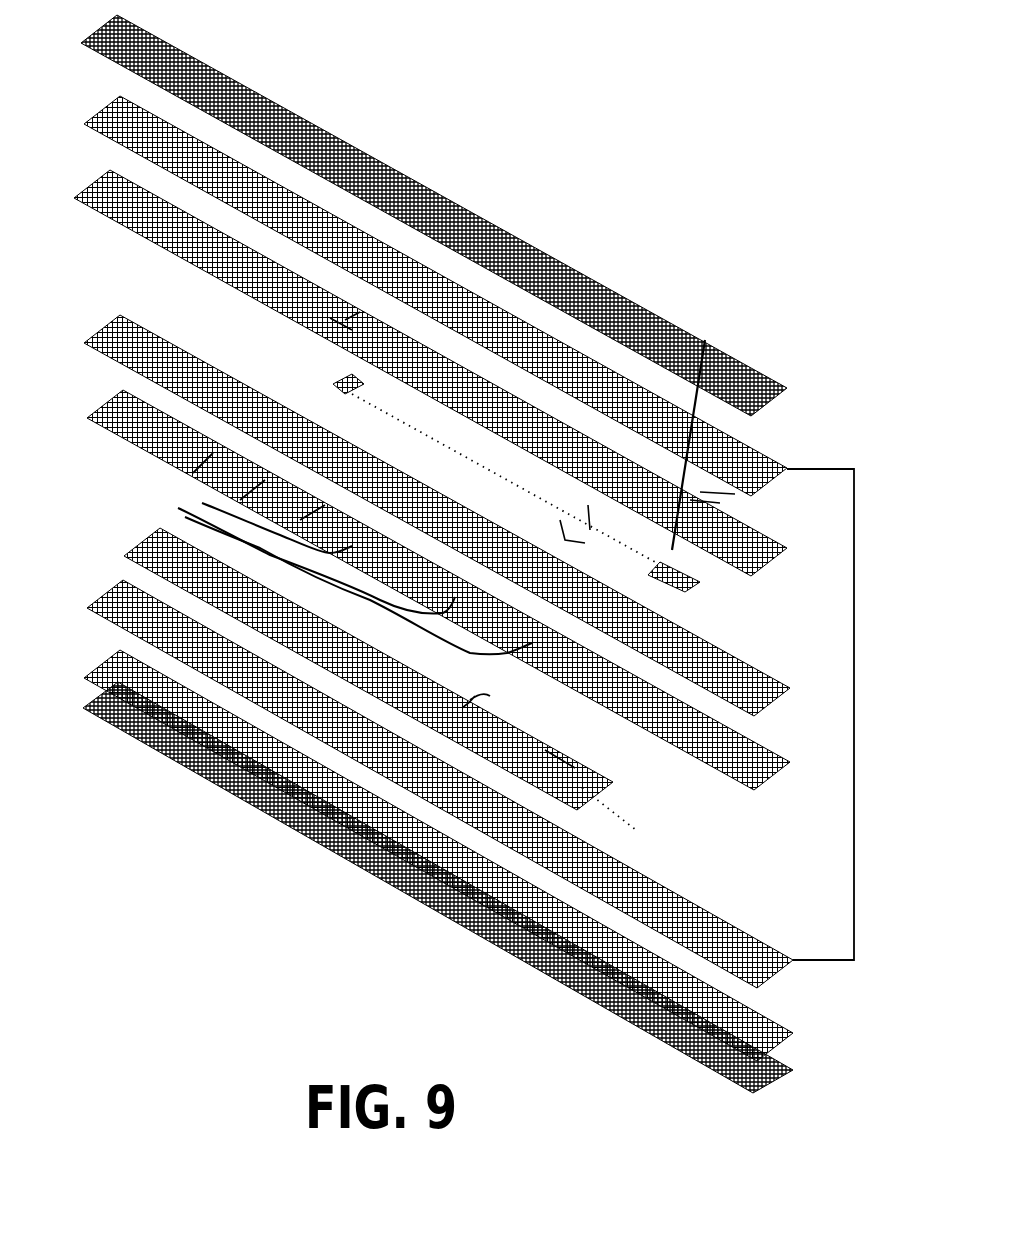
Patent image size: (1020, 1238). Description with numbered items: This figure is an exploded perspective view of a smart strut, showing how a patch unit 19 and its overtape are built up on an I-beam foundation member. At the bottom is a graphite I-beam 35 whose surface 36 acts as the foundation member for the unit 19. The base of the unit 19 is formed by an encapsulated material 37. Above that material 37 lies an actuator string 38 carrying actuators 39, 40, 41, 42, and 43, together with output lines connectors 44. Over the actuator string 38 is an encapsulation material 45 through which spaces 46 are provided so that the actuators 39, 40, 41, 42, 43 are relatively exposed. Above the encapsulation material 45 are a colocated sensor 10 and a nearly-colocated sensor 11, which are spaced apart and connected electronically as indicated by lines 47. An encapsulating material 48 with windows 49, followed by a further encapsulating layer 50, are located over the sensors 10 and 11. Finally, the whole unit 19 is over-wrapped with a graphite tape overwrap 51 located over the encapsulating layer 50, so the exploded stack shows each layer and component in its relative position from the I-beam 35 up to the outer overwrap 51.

The colocated sensor 10 is at (388, 370).
The nearly-colocated sensor 11 is at (699, 422).
The unit 19 is at (831, 714).
The graphite I-beam 35 is at (210, 778).
The surface 36 is at (103, 653).
The encapsulated material 37 is at (105, 580).
The actuator string 38 is at (155, 530).
The actuator 39 is at (277, 535).
The actuator 40 is at (316, 561).
The actuator 41 is at (358, 586).
The actuator 42 is at (474, 703).
The actuator 43 is at (553, 747).
The output lines connectors 44 is at (627, 828).
The encapsulation material 45 is at (105, 405).
The spaces 46 is at (270, 505).
The lines 47 is at (538, 486).
The encapsulating material 48 is at (93, 182).
The windows 49 is at (345, 325).
The encapsulating layer 50 is at (110, 135).
The graphite tape overwrap 51 is at (355, 140).